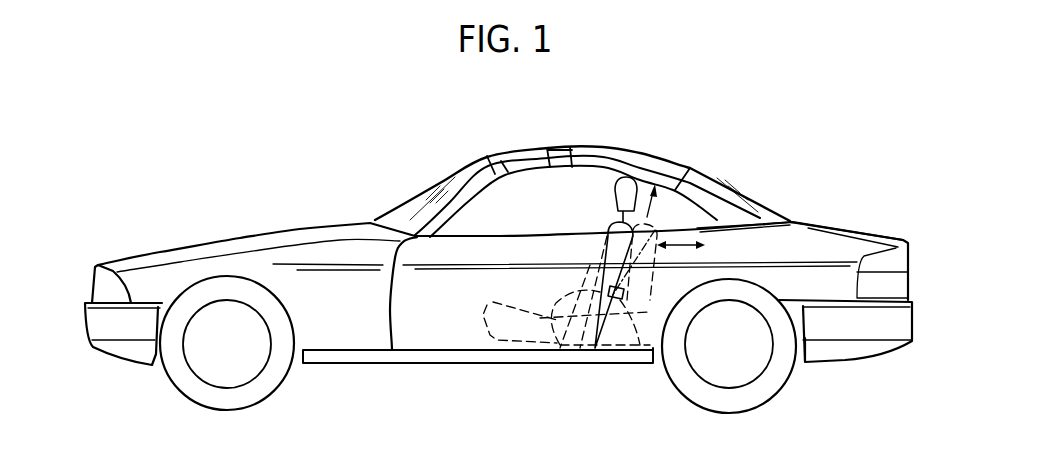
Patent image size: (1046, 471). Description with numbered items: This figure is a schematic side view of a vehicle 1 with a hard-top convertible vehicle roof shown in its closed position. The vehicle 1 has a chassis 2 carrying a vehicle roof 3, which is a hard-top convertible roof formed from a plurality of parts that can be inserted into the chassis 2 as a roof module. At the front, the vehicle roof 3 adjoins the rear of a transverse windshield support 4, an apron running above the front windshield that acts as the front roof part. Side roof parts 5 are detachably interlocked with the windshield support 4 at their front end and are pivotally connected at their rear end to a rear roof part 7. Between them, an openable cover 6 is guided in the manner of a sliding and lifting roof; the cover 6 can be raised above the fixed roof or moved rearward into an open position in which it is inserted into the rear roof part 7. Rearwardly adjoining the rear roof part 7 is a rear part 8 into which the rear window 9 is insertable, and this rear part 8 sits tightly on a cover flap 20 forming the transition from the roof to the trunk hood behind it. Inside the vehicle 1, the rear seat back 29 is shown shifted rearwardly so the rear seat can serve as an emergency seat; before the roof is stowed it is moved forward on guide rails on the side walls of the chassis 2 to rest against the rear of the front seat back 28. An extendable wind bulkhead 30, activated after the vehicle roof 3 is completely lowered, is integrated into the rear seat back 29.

The vehicle 1 is at (316, 146).
The chassis 2 is at (405, 362).
The vehicle roof 3 is at (607, 134).
The transverse windshield support 4 is at (492, 157).
The side roof parts 5 is at (548, 163).
The cover 6 is at (523, 150).
The rear roof part 7 is at (635, 153).
The rear part 8 is at (703, 187).
The rear window 9 is at (753, 195).
The cover flap 20 is at (800, 222).
The front seat back 28 is at (557, 347).
The rear seat back 29 is at (617, 320).
The wind bulkhead 30 is at (643, 340).